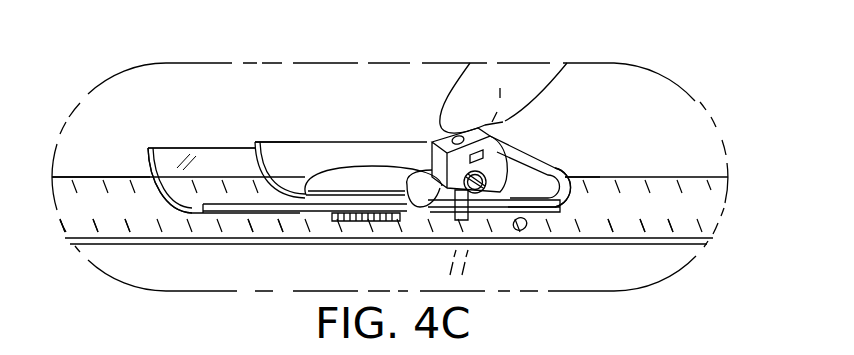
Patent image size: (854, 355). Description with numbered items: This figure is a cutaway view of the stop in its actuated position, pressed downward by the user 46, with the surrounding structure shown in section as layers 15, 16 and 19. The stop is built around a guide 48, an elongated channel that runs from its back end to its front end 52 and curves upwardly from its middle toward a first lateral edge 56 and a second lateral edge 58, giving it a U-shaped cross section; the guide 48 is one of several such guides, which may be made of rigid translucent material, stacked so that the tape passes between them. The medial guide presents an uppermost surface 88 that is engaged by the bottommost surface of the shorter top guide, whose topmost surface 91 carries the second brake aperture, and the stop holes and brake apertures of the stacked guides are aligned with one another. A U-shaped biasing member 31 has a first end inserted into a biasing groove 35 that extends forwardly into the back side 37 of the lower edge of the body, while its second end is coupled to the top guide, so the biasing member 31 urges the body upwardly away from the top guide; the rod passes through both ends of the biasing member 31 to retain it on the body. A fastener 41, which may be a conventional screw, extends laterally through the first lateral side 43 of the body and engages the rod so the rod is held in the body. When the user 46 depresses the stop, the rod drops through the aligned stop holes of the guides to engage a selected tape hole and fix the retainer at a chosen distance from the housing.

The first layer 15 is at (120, 216).
The second layer 16 is at (276, 217).
The third layer 19 is at (639, 215).
The U-shaped biasing member 31 is at (563, 170).
The biasing groove 35 is at (503, 122).
The back side 37 is at (548, 165).
The fastener 41 is at (488, 195).
The first lateral side 43 is at (450, 172).
The user 46 is at (415, 125).
The guide 48 is at (271, 100).
The front end 52 is at (150, 185).
The first lateral edge 56 is at (170, 147).
The second lateral edge 58 is at (233, 212).
The uppermost surface 88 is at (204, 160).
The topmost surface 91 is at (312, 156).